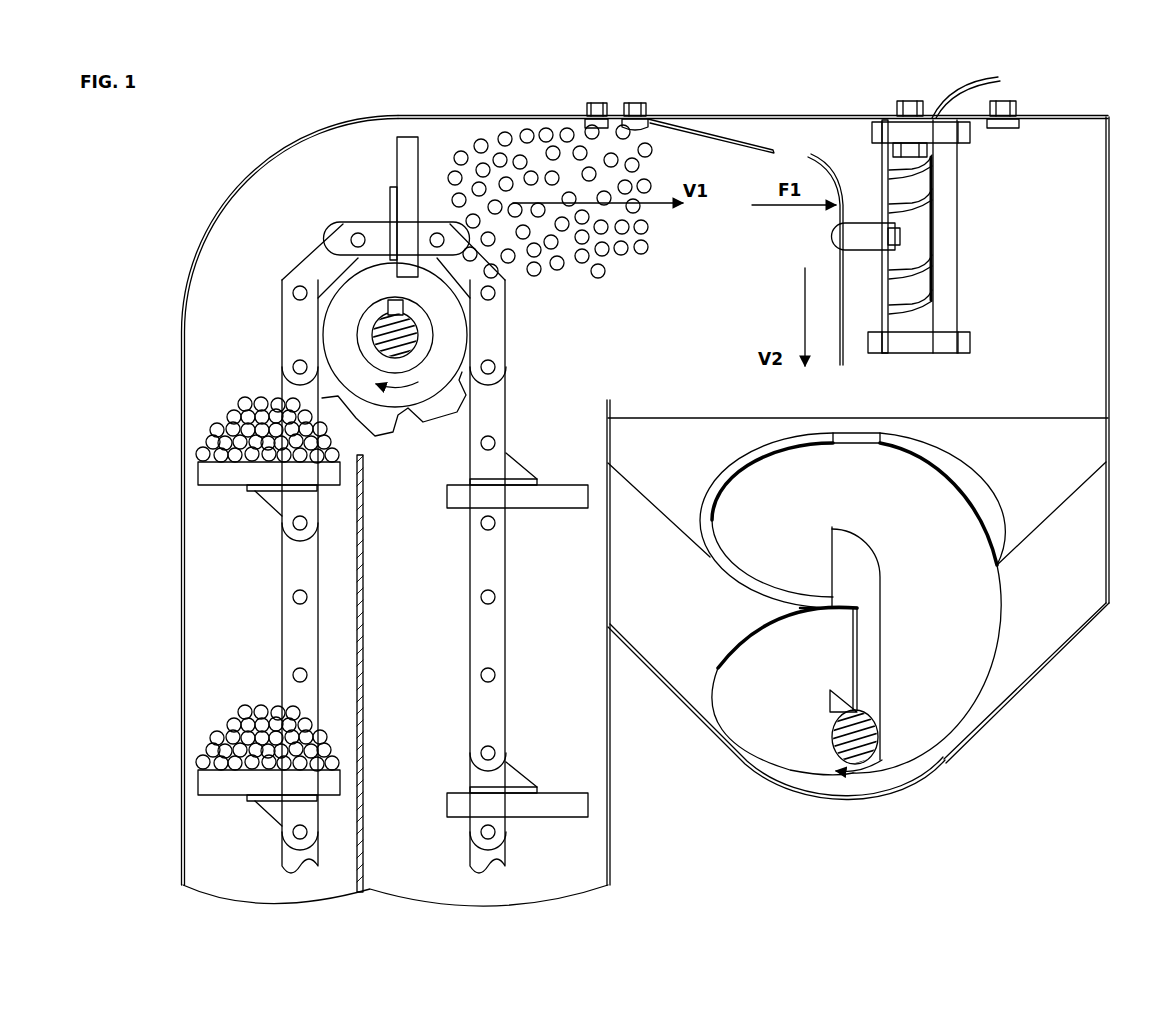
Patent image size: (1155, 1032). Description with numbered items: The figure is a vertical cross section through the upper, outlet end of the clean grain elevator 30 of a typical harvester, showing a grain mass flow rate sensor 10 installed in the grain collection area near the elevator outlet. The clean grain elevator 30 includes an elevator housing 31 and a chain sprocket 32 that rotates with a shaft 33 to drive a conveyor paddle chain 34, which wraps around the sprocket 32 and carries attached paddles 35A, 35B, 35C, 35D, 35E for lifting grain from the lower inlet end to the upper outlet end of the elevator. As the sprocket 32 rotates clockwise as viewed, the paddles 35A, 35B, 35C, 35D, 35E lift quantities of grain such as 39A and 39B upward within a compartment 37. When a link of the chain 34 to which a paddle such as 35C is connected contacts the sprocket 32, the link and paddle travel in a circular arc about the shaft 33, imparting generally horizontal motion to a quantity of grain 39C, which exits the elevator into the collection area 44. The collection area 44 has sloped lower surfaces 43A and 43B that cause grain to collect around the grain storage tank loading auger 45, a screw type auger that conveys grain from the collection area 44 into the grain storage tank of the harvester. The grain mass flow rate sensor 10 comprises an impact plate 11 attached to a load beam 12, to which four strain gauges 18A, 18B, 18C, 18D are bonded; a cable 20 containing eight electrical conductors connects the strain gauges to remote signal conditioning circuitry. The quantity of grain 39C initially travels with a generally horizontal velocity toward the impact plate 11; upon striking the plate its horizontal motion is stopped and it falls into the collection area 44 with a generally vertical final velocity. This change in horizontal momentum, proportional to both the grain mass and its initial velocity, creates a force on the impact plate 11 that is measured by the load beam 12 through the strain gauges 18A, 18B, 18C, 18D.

The grain mass flow rate sensor 10 is at (953, 236).
The impact plate 11 is at (816, 160).
The load beam 12 is at (882, 178).
The strain gauge 18A is at (891, 171).
The strain gauge 18B is at (891, 206).
The strain gauge 18C is at (891, 272).
The strain gauge 18D is at (891, 310).
The cable 20 is at (1000, 79).
The clean grain elevator 30 is at (538, 92).
The elevator housing 31 is at (211, 228).
The chain sprocket 32 is at (410, 428).
The shaft 33 is at (418, 338).
The conveyor paddle chain 34 is at (507, 403).
The paddle 35A is at (223, 796).
The paddle 35B is at (230, 486).
The paddle 35C is at (396, 176).
The paddle 35D is at (528, 509).
The paddle 35E is at (542, 818).
The compartment 37 is at (253, 621).
The quantity of grain 39A is at (224, 702).
The quantity of grain 39B is at (226, 398).
The quantity of grain 39C is at (612, 264).
The sloped lower surface 43A is at (657, 672).
The sloped lower surface 43B is at (1067, 639).
The collection area 44 is at (685, 469).
The grain storage tank loading auger 45 is at (968, 507).